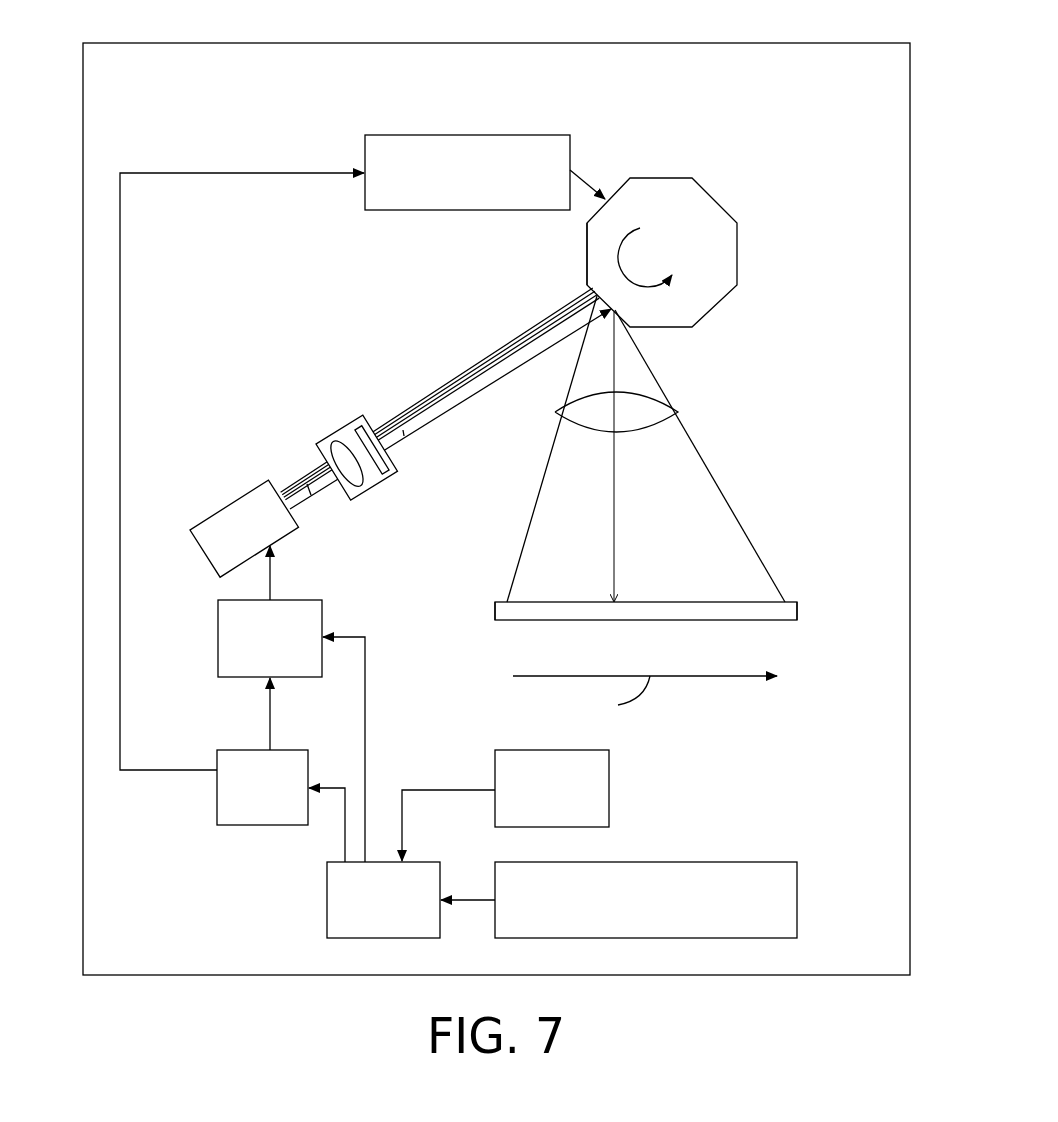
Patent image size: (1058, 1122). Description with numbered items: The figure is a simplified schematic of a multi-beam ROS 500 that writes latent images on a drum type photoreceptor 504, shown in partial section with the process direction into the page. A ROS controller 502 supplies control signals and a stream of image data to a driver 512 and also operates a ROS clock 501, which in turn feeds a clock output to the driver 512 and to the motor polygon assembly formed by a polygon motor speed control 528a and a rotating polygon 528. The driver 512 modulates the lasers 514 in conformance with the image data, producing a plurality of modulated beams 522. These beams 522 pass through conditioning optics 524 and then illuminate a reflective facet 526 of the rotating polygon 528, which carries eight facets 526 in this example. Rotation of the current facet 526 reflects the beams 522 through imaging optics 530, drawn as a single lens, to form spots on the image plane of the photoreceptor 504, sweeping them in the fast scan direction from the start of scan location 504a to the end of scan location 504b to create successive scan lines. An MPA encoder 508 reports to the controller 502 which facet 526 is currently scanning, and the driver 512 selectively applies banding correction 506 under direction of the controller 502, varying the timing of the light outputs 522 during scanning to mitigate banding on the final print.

The multi-beam ROS 500 is at (486, 43).
The ROS clock 501 is at (217, 798).
The ROS controller 502 is at (327, 898).
The photoreceptor 504 is at (788, 582).
The start of scan (SOS) location 504a is at (495, 611).
The end of scan (EOS) location 504b is at (797, 612).
The banding correction 506 is at (797, 897).
The MPA encoder 508 is at (609, 785).
The driver 512 is at (218, 637).
The lasers 514 is at (200, 553).
The beams 522 is at (425, 399).
The conditioning optics 524 is at (368, 486).
The facets 526 is at (587, 254).
The rotating polygon 528 is at (737, 253).
The polygon motor speed control 528a is at (365, 152).
The imaging optics 530 is at (555, 412).